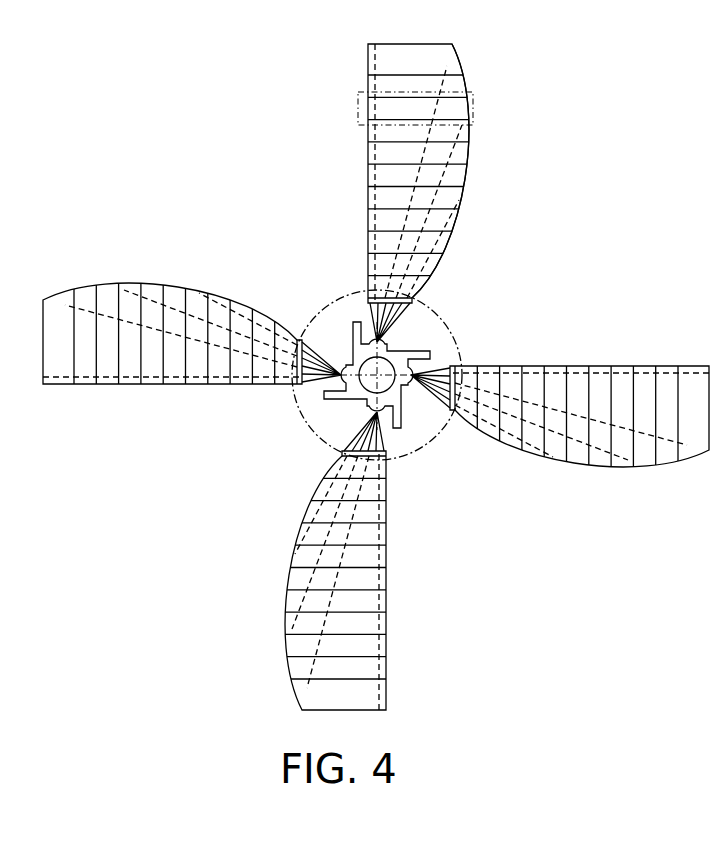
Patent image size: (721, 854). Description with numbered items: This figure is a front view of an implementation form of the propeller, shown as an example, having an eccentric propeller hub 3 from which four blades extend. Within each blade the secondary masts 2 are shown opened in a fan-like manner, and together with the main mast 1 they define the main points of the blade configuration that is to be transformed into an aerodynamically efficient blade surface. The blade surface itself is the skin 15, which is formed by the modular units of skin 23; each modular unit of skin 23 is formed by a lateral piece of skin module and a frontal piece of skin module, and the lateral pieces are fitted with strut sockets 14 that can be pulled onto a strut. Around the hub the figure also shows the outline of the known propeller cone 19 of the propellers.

The main mast 1 is at (368, 62).
The secondary masts 2 is at (313, 653).
The eccentric propeller hub 3 is at (407, 352).
The strut sockets 14 is at (462, 83).
The skin 15 is at (108, 270).
The propeller cone 19 is at (323, 308).
The modular unit of skin 23 is at (473, 110).